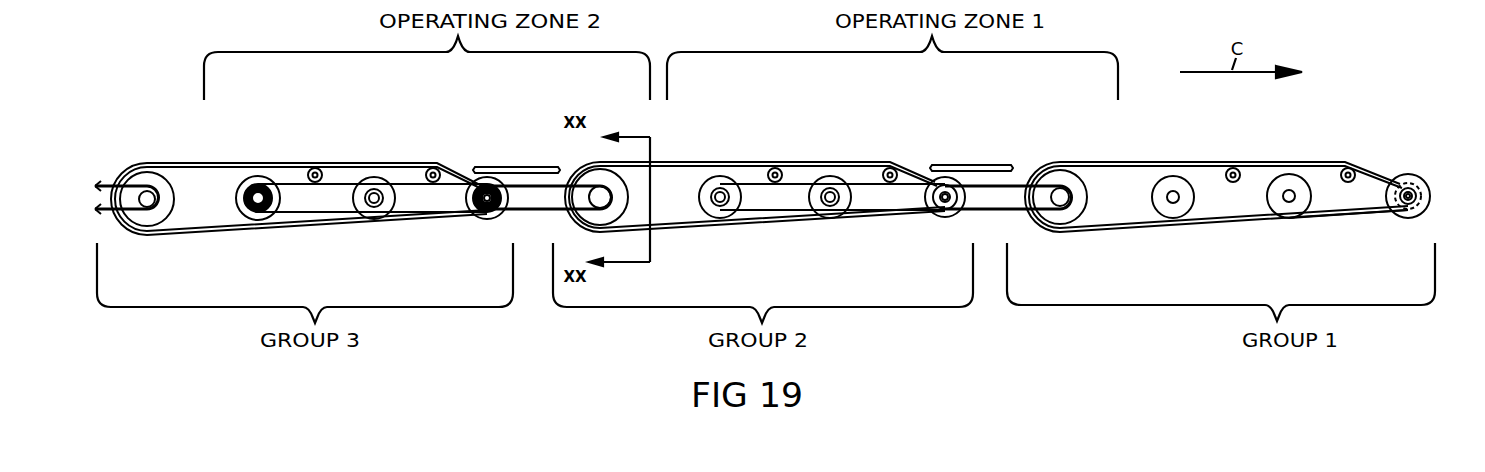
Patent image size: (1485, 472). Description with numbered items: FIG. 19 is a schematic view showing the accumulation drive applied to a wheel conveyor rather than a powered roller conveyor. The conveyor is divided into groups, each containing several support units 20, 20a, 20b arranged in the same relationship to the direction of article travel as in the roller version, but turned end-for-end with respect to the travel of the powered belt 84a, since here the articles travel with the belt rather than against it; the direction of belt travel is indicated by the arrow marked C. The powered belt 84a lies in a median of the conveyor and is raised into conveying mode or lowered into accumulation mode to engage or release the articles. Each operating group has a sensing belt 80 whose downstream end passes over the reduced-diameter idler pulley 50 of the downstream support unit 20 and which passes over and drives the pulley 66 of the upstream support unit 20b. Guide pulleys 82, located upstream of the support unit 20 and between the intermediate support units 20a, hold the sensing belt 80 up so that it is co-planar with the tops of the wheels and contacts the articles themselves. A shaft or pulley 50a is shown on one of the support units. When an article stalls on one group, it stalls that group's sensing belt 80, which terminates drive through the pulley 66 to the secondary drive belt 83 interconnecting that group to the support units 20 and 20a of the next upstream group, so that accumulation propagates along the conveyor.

The support unit 20 is at (488, 212).
The intermediate support unit 20a is at (388, 205).
The upstream support unit 20b is at (153, 218).
The idler pulley 50 is at (495, 210).
The shaft 50a is at (272, 205).
The pulley 66 is at (158, 178).
The sensing belt 80 is at (893, 215).
The guide pulley 82 is at (316, 170).
The secondary drive belt 83 is at (760, 259).
The powered belt 84a is at (506, 166).